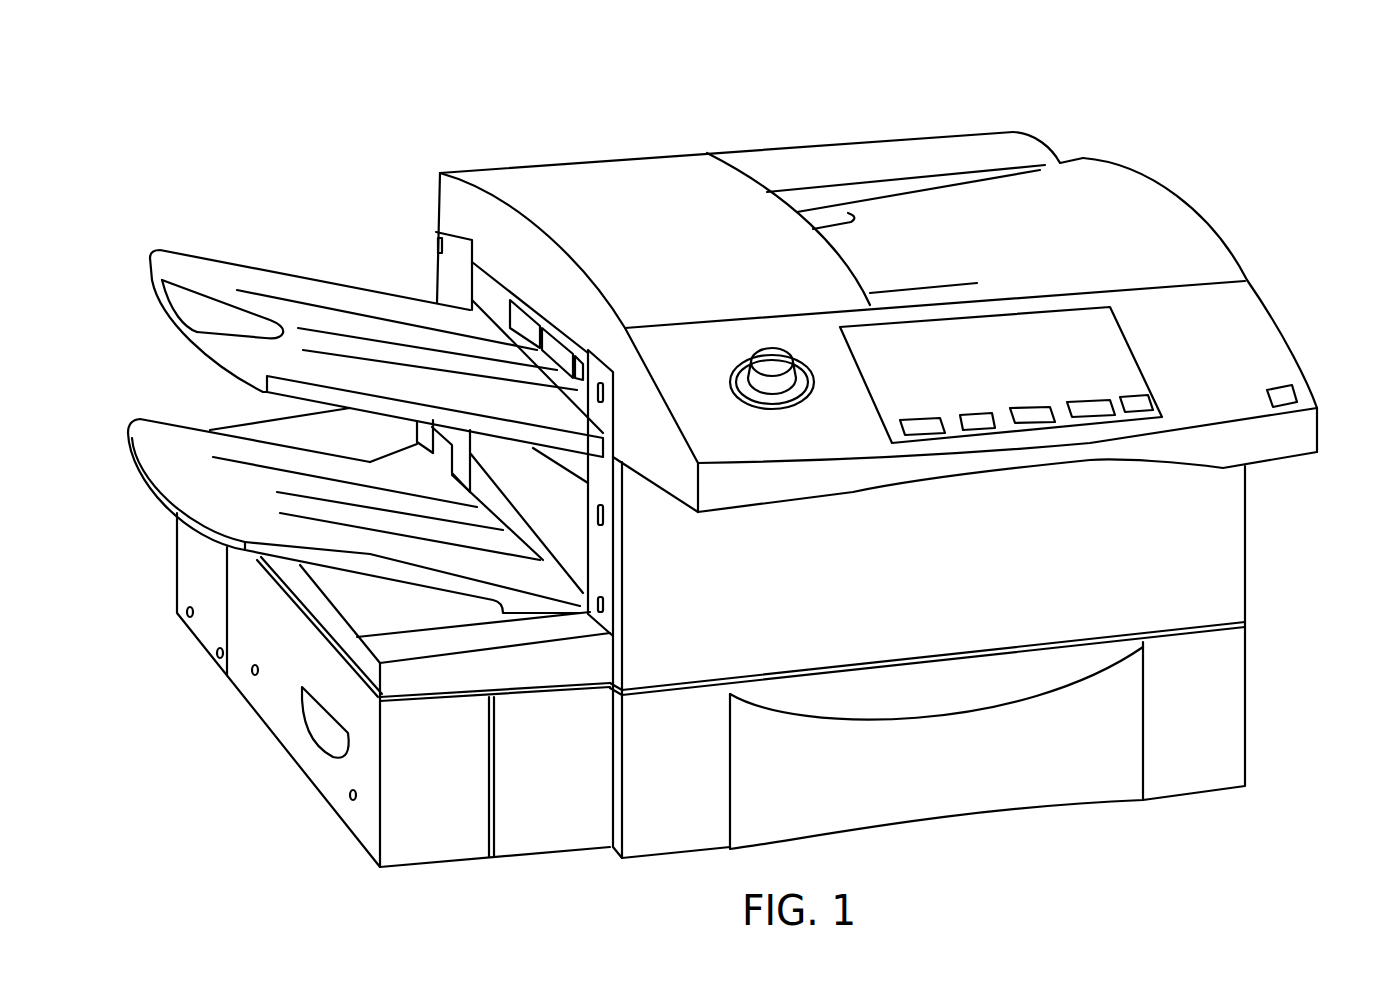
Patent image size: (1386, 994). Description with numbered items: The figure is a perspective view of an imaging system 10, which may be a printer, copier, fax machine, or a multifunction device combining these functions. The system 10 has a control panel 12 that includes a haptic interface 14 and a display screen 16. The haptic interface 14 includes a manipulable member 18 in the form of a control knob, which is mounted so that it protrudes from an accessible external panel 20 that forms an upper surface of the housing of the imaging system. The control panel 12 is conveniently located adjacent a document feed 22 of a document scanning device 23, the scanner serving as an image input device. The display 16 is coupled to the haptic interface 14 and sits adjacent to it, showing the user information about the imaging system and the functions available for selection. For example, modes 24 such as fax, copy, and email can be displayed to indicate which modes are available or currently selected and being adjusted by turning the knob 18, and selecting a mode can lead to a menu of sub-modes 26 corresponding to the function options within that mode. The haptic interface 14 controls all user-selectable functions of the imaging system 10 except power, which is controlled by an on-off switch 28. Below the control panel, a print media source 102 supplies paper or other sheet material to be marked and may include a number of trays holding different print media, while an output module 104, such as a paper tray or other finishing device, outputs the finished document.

The imaging system 10 is at (700, 88).
The control panel 12 is at (1198, 359).
The haptic interface 14 is at (714, 370).
The display screen 16 is at (1110, 337).
The manipulable member 18 is at (770, 355).
The external panel 20 is at (1277, 353).
The document feed 22 is at (867, 222).
The document scanning device 23 is at (455, 207).
The modes 24 is at (1073, 313).
The sub-modes 26 is at (1122, 375).
The on-off switch 28 is at (1290, 393).
The print media source 102 is at (1248, 738).
The output module 104 is at (217, 270).